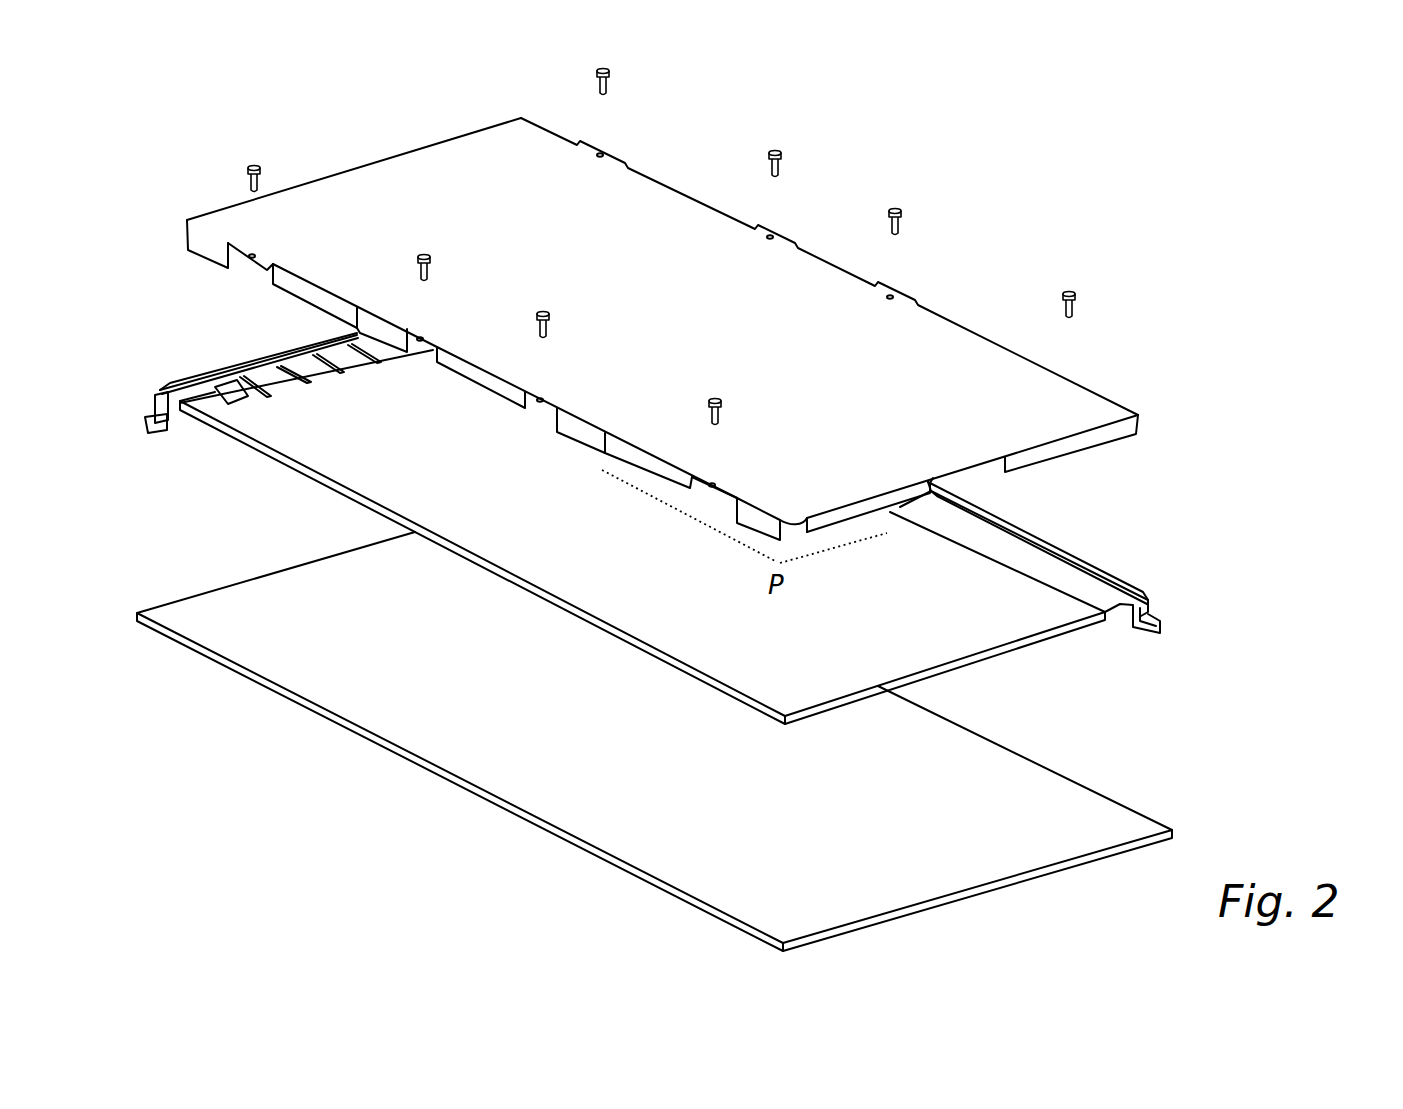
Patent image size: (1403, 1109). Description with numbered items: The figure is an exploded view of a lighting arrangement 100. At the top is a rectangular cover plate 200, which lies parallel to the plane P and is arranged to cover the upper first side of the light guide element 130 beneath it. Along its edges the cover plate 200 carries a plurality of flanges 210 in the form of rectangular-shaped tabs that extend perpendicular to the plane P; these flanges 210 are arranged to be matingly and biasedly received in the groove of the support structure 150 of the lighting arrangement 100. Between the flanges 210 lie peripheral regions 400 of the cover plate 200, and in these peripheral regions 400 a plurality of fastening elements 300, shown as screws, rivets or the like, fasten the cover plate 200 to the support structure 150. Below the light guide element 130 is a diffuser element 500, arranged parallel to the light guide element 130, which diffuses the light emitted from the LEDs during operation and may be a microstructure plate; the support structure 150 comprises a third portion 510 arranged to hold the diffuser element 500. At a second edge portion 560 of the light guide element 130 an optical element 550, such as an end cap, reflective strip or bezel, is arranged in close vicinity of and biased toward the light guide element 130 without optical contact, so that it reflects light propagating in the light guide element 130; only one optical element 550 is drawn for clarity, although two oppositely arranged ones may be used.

The lighting arrangement 100 is at (1260, 513).
The light guide element 130 is at (1013, 628).
The support structure 150 is at (1119, 579).
The cover plate 200 is at (1092, 412).
The flange 210 is at (1092, 438).
The fastening element 300 is at (250, 166).
The peripheral region 400 is at (726, 491).
The diffuser element 500 is at (887, 897).
The third portion 510 is at (1162, 623).
The optical element 550 is at (248, 366).
The second edge portion 560 is at (213, 401).